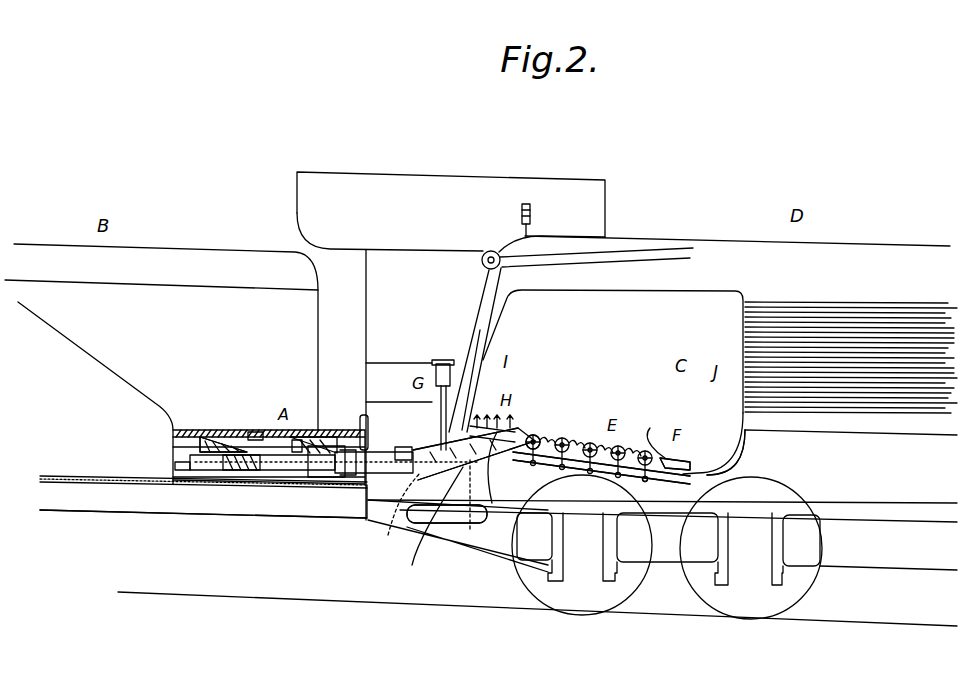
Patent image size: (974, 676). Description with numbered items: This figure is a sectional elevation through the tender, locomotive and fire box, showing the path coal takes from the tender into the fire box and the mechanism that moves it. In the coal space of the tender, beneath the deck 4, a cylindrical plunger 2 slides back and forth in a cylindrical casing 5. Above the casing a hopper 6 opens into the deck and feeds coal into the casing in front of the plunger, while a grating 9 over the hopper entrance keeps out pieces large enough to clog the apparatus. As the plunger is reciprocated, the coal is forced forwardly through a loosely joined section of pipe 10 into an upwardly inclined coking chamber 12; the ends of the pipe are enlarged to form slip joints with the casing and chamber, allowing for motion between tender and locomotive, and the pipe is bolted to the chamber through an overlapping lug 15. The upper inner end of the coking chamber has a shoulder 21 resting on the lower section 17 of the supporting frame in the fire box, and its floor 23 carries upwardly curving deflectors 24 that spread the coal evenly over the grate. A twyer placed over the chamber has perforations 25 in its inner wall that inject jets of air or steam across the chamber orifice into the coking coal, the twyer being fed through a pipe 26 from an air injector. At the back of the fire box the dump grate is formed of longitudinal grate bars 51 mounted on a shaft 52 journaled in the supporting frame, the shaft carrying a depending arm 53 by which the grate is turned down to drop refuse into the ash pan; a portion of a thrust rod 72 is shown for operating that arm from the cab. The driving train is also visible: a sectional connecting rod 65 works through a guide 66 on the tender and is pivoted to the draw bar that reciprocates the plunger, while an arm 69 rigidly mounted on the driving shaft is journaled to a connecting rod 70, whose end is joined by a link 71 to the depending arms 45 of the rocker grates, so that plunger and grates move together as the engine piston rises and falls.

The plunger 2 is at (242, 452).
The deck 4 is at (321, 446).
The cylindrical casing 5 is at (183, 475).
The hopper 6 is at (221, 448).
The grating 9 is at (262, 432).
The pipe section 10 is at (350, 485).
The coking chamber 12 is at (427, 466).
The lug 15 is at (402, 447).
The lower section of supporting frame 17 is at (503, 467).
The shoulder 21 is at (488, 506).
The floor 23 is at (470, 530).
The deflector 24 is at (506, 431).
The perforation 25 is at (541, 437).
The pipe 26 is at (447, 517).
The depending arm 45 is at (660, 480).
The grate bar 51 is at (686, 452).
The shaft 52 is at (652, 433).
The depending arm 53 is at (726, 452).
The sectional connecting rod 65 is at (347, 450).
The guide 66 is at (297, 450).
The arm 69 is at (397, 511).
The connecting rod 70 is at (432, 525).
The link 71 is at (624, 478).
The thrust rod portion 72 is at (660, 482).